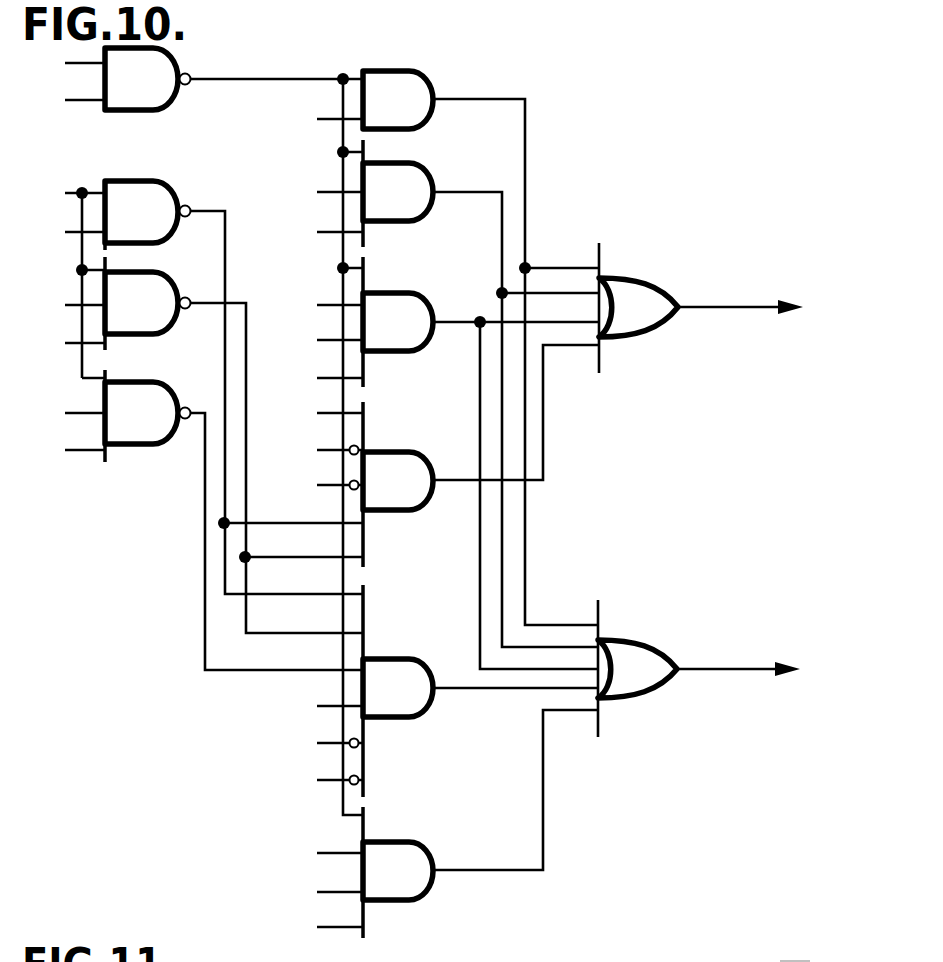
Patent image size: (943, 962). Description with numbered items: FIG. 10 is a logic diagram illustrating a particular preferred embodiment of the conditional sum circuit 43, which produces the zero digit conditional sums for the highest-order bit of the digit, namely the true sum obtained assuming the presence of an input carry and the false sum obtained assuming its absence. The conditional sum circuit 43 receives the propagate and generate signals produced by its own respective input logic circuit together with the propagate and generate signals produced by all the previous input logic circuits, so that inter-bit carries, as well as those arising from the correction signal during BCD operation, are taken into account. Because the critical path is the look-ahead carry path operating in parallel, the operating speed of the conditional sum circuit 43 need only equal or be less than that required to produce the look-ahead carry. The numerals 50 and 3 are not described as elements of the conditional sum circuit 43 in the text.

The conditional sum circuit 43 is at (684, 125).
The carry logic circuit (FIG. 11) 50 is at (795, 953).
The bit-3 sum output OR gate (SO3-F) 3 is at (752, 307).